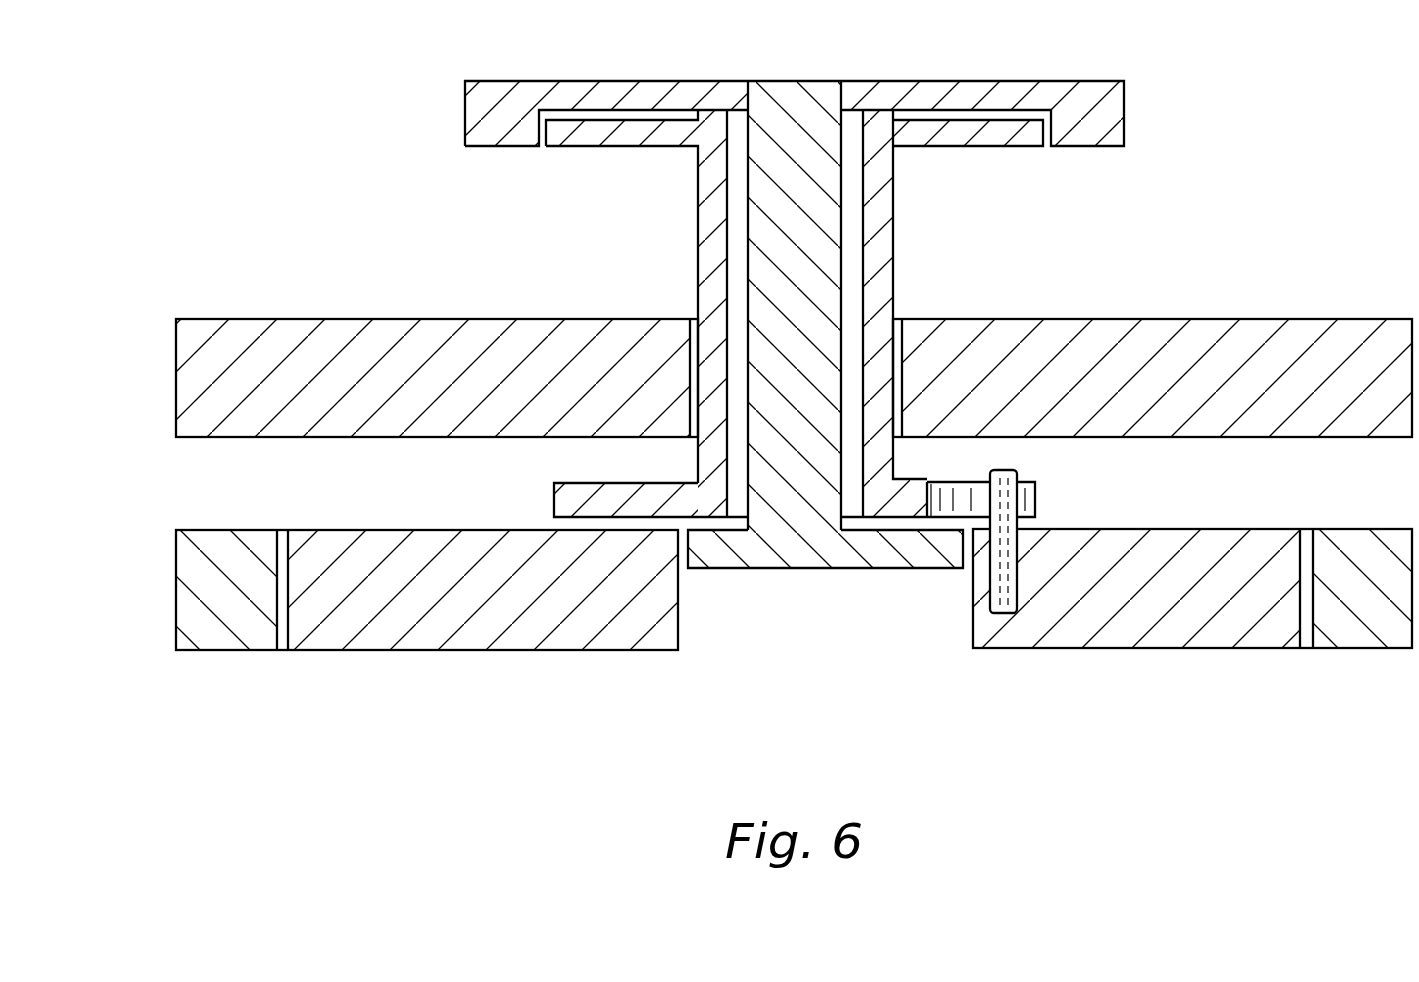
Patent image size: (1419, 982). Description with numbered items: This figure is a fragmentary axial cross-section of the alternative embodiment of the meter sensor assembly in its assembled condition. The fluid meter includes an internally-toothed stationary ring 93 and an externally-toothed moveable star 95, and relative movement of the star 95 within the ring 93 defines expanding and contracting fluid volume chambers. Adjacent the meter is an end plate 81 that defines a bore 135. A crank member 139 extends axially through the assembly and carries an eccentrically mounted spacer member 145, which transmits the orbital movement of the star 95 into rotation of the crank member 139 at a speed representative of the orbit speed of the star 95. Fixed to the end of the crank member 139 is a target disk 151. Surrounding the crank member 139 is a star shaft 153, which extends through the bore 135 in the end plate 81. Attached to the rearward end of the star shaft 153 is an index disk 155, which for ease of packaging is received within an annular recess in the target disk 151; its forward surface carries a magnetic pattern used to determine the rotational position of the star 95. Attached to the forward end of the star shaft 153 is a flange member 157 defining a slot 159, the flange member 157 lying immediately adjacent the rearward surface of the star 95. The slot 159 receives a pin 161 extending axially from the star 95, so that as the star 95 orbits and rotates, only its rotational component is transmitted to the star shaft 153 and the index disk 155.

The end plate 81 is at (1305, 318).
The internally-toothed stationary ring 93 is at (1366, 651).
The externally-toothed moveable star 95 is at (462, 650).
The bore 135 is at (688, 362).
The crank member 139 is at (792, 260).
The spacer member 145 is at (783, 568).
The target disk 151 is at (647, 81).
The star shaft 153 is at (699, 200).
The index disk 155 is at (1017, 146).
The flange member 157 is at (572, 483).
The slot 159 is at (1030, 493).
The pin 161 is at (1000, 570).